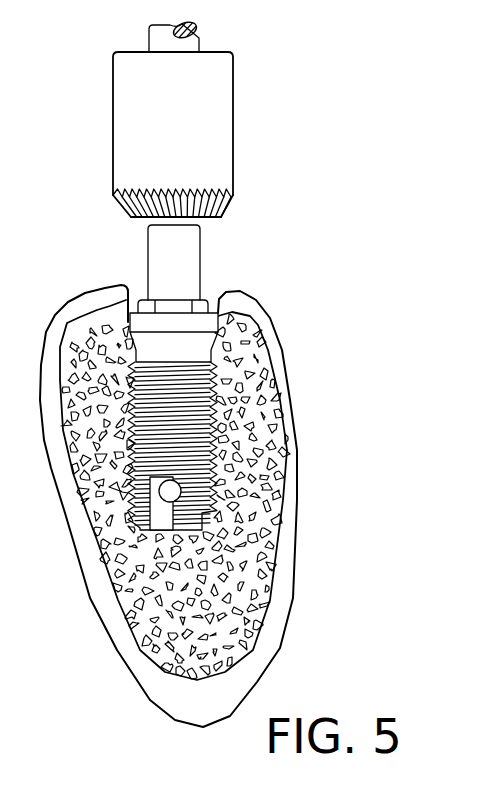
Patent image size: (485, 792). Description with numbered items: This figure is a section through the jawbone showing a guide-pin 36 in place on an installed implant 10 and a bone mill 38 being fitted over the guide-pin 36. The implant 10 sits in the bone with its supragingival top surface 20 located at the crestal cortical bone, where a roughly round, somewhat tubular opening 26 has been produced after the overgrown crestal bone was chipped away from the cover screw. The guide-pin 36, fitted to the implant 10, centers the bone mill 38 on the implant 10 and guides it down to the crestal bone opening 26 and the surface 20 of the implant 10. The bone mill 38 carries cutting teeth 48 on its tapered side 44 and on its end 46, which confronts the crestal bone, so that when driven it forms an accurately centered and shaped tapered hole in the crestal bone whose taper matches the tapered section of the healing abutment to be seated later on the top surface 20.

The implant 10 is at (192, 527).
The supragingival surface 20 is at (221, 288).
The opening 26 is at (128, 298).
The guide-pin 36 is at (188, 262).
The bone mill 38 is at (227, 117).
The tapered side 44 is at (230, 207).
The end 46 is at (130, 222).
The cutting teeth 48 is at (168, 202).